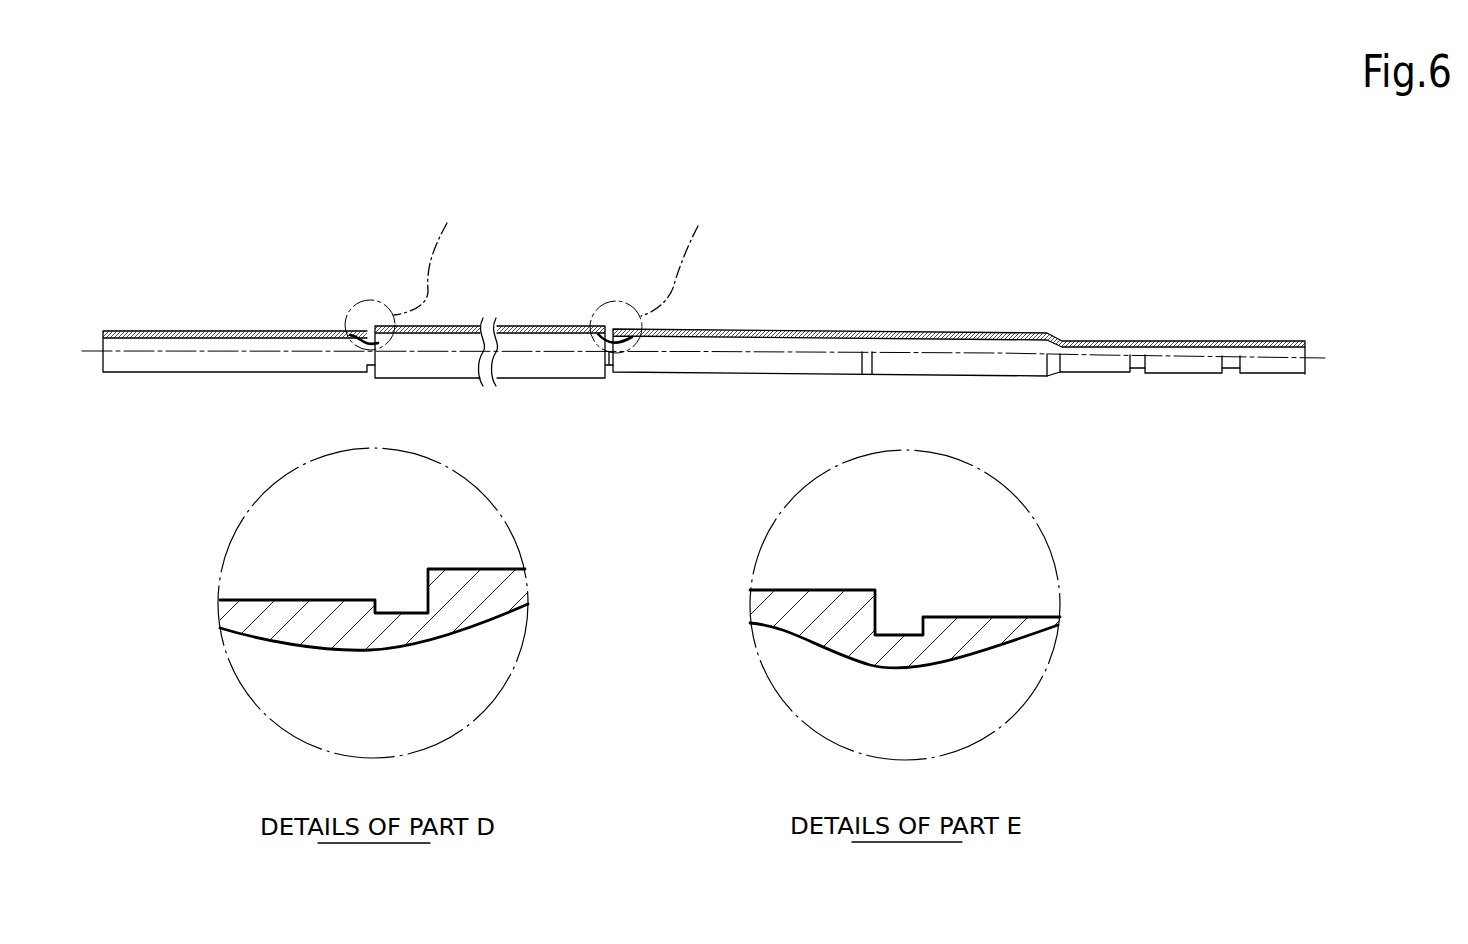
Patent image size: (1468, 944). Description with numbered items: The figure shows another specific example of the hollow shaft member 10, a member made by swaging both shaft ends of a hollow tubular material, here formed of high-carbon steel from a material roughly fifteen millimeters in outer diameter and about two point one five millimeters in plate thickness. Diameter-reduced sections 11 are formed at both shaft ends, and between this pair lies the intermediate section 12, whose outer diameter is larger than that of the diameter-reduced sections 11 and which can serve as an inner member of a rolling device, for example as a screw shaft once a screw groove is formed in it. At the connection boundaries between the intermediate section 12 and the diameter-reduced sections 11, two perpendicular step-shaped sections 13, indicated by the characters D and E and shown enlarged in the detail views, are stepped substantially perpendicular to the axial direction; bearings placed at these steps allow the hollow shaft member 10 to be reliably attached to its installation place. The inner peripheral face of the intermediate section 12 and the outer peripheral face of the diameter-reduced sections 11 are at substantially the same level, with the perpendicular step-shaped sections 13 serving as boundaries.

The hollow shaft member 10 is at (703, 235).
The diameter-reduced sections 11 is at (228, 331).
The intermediate section 12 is at (539, 328).
The perpendicular step-shaped sections 13 is at (371, 331).